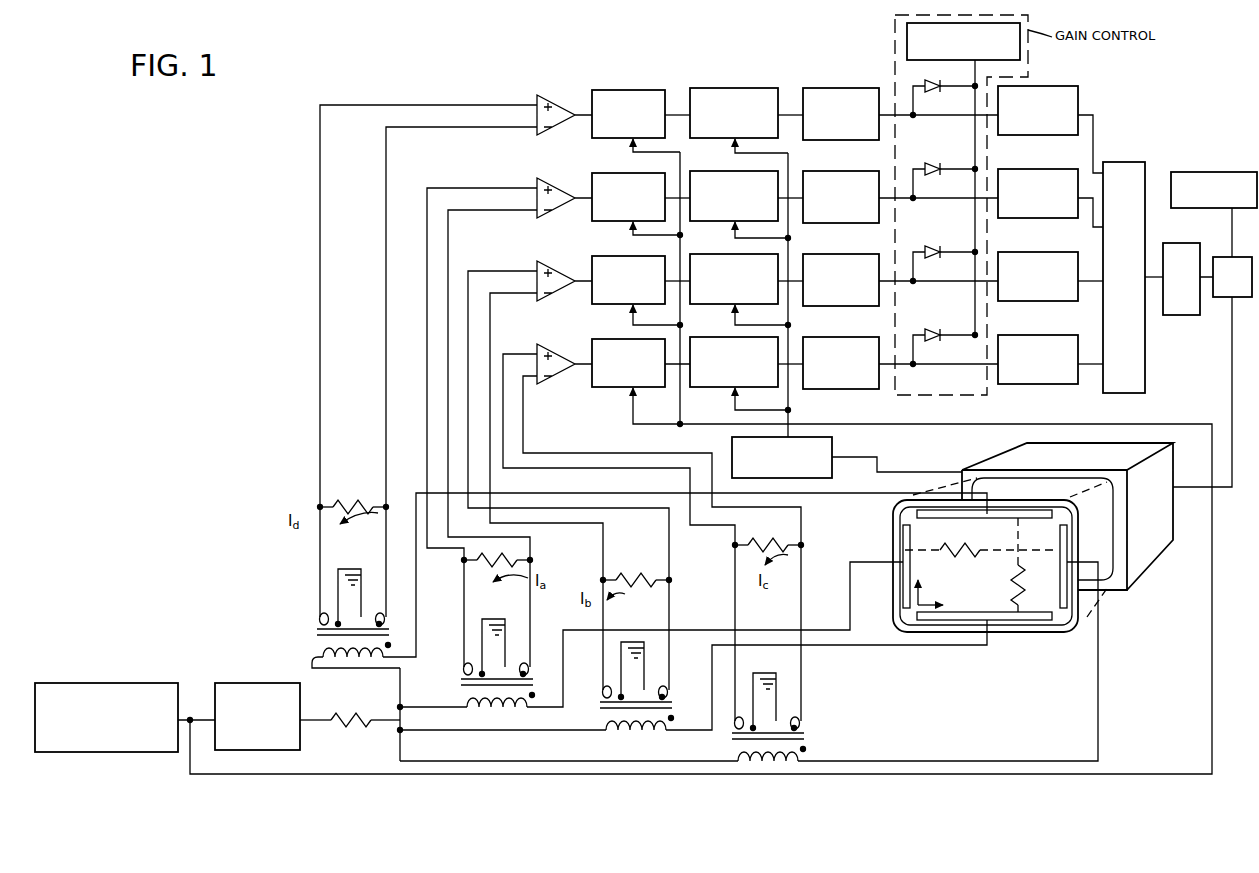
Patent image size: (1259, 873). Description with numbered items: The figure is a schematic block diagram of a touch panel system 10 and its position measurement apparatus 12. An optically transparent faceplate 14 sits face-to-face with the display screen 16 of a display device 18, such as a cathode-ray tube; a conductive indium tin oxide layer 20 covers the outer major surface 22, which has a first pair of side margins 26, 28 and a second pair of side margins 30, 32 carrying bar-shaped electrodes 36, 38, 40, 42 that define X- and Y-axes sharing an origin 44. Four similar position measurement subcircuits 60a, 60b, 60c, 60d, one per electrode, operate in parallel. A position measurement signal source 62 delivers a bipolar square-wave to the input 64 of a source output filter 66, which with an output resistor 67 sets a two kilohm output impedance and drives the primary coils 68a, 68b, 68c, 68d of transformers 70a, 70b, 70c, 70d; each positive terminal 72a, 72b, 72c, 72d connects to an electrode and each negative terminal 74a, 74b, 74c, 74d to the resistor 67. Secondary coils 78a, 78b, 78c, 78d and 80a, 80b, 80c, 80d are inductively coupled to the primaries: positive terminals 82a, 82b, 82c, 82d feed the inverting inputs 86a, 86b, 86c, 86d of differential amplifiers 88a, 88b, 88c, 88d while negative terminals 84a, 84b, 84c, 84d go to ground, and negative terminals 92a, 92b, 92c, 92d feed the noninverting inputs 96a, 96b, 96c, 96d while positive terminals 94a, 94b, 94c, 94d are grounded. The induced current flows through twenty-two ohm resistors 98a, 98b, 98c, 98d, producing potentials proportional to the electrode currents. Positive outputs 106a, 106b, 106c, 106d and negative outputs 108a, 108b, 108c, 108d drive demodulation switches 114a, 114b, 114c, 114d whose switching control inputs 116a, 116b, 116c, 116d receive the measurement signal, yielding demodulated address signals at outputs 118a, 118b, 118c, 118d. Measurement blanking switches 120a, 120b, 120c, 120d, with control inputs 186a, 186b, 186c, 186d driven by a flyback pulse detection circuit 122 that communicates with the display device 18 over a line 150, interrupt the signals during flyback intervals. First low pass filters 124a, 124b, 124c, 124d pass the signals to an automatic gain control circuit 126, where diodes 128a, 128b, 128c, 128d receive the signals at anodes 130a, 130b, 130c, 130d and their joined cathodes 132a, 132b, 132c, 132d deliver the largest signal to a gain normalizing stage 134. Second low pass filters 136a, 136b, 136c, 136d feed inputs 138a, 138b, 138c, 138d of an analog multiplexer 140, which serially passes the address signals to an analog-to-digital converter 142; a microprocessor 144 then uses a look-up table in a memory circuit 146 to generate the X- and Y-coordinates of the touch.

The touch panel system 10 is at (1120, 636).
The position measurement apparatus 12 is at (247, 235).
The faceplate 14 is at (1031, 638).
The display screen 16 is at (1110, 555).
The display device 18 is at (1005, 452).
The conductive layer 20 is at (1005, 632).
The outer major surface 22 is at (1080, 478).
The side margin 26 is at (893, 530).
The side margin 28 is at (962, 640).
The side margin 30 is at (1078, 545).
The side margin 32 is at (1005, 510).
The electrode 36 is at (903, 565).
The electrode 38 is at (1040, 622).
The electrode 40 is at (1068, 525).
The electrode 42 is at (1020, 510).
The origin 44 is at (925, 600).
The position measurement subcircuit 60a is at (520, 178).
The position measurement subcircuit 60b is at (528, 260).
The position measurement subcircuit 60c is at (530, 341).
The position measurement subcircuit 60d is at (517, 88).
The position measurement signal source 62 is at (88, 752).
The input 64 is at (190, 718).
The source output filter 66 is at (258, 750).
The output resistor 67 is at (352, 730).
The primary coil 68a is at (500, 722).
The primary coil 68b is at (640, 732).
The primary coil 68c is at (780, 762).
The primary coil 68d is at (325, 650).
The transformer 70a is at (470, 722).
The transformer 70b is at (612, 742).
The transformer 70c is at (755, 770).
The transformer 70d is at (333, 675).
The positive terminal 72a is at (545, 707).
The positive terminal 72b is at (690, 733).
The positive terminal 72c is at (820, 756).
The positive terminal 72d is at (393, 675).
The negative terminal 74a is at (456, 707).
The negative terminal 74b is at (596, 735).
The negative terminal 74c is at (728, 765).
The negative terminal 74d is at (312, 668).
The secondary coil 78a is at (540, 650).
The secondary coil 78b is at (672, 700).
The secondary coil 78c is at (810, 725).
The secondary coil 78d is at (388, 600).
The secondary coil 80a is at (465, 670).
The secondary coil 80b is at (605, 705).
The secondary coil 80c is at (745, 738).
The secondary coil 80d is at (318, 622).
The positive terminal 82a is at (525, 612).
The positive terminal 82b is at (668, 680).
The positive terminal 82c is at (805, 712).
The positive terminal 82d is at (383, 578).
The negative terminal 84a is at (505, 619).
The negative terminal 84b is at (645, 642).
The negative terminal 84c is at (774, 673).
The negative terminal 84d is at (365, 562).
The inverting input 86a is at (512, 210).
The inverting input 86b is at (512, 293).
The inverting input 86c is at (525, 410).
The inverting input 86d is at (478, 128).
The differential amplifier 88a is at (543, 178).
The differential amplifier 88b is at (545, 261).
The differential amplifier 88c is at (545, 344).
The differential amplifier 88d is at (546, 95).
The negative terminal 92a is at (464, 655).
The negative terminal 92b is at (603, 690).
The negative terminal 92c is at (733, 700).
The negative terminal 92d is at (316, 600).
The positive terminal 94a is at (466, 630).
The positive terminal 94b is at (618, 658).
The positive terminal 94c is at (736, 660).
The positive terminal 94d is at (318, 590).
The noninverting input 96a is at (488, 188).
The noninverting input 96b is at (503, 271).
The noninverting input 96c is at (509, 354).
The noninverting input 96d is at (486, 105).
The resistor 98a is at (512, 557).
The resistor 98b is at (638, 578).
The resistor 98c is at (748, 545).
The resistor 98d is at (352, 505).
The positive output 106a is at (580, 196).
The positive output 106b is at (580, 279).
The positive output 106c is at (580, 362).
The positive output 106d is at (580, 106).
The negative output 108a is at (580, 212).
The negative output 108b is at (580, 295).
The negative output 108c is at (580, 388).
The negative output 108d is at (580, 128).
The demodulation switch 114a is at (628, 173).
The demodulation switch 114b is at (628, 256).
The demodulation switch 114c is at (628, 339).
The demodulation switch 114d is at (631, 90).
The switching control input 116a is at (641, 239).
The switching control input 116b is at (641, 329).
The switching control input 116c is at (633, 424).
The switching control input 116d is at (642, 154).
The output 118a is at (677, 198).
The output 118b is at (677, 281).
The output 118c is at (680, 404).
The output 118d is at (677, 112).
The measurement blanking switch 120a is at (725, 173).
The measurement blanking switch 120b is at (724, 256).
The measurement blanking switch 120c is at (724, 339).
The measurement blanking switch 120d is at (725, 88).
The flyback pulse detection circuit 122 is at (732, 450).
The first low pass filter 124a is at (810, 163).
The first low pass filter 124b is at (810, 246).
The first low pass filter 124c is at (810, 331).
The first low pass filter 124d is at (803, 88).
The automatic gain control circuit 126 is at (895, 28).
The diode 128a is at (925, 204).
The diode 128b is at (935, 250).
The diode 128c is at (935, 330).
The diode 128d is at (914, 116).
The anode 130a is at (912, 175).
The anode 130b is at (912, 258).
The anode 130c is at (912, 342).
The anode 130d is at (912, 92).
The cathode 132a is at (955, 165).
The cathode 132b is at (955, 247).
The cathode 132c is at (955, 332).
The cathode 132d is at (948, 86).
The gain normalizing stage 134 is at (907, 45).
The second low pass filter 136a is at (1035, 169).
The second low pass filter 136b is at (1036, 252).
The second low pass filter 136c is at (1036, 335).
The second low pass filter 136d is at (1050, 86).
The input 138a is at (1093, 220).
The input 138b is at (1093, 290).
The input 138c is at (1093, 380).
The input 138d is at (1093, 122).
The analog multiplexer 140 is at (1130, 162).
The analog-to-digital converter 142 is at (1181, 315).
The microprocessor 144 is at (1232, 300).
The memory circuit 146 is at (1215, 172).
The flyback detector input line 150 is at (928, 472).
The control input 186a is at (735, 241).
The control input 186b is at (735, 329).
The control input 186c is at (735, 414).
The control input 186d is at (735, 155).